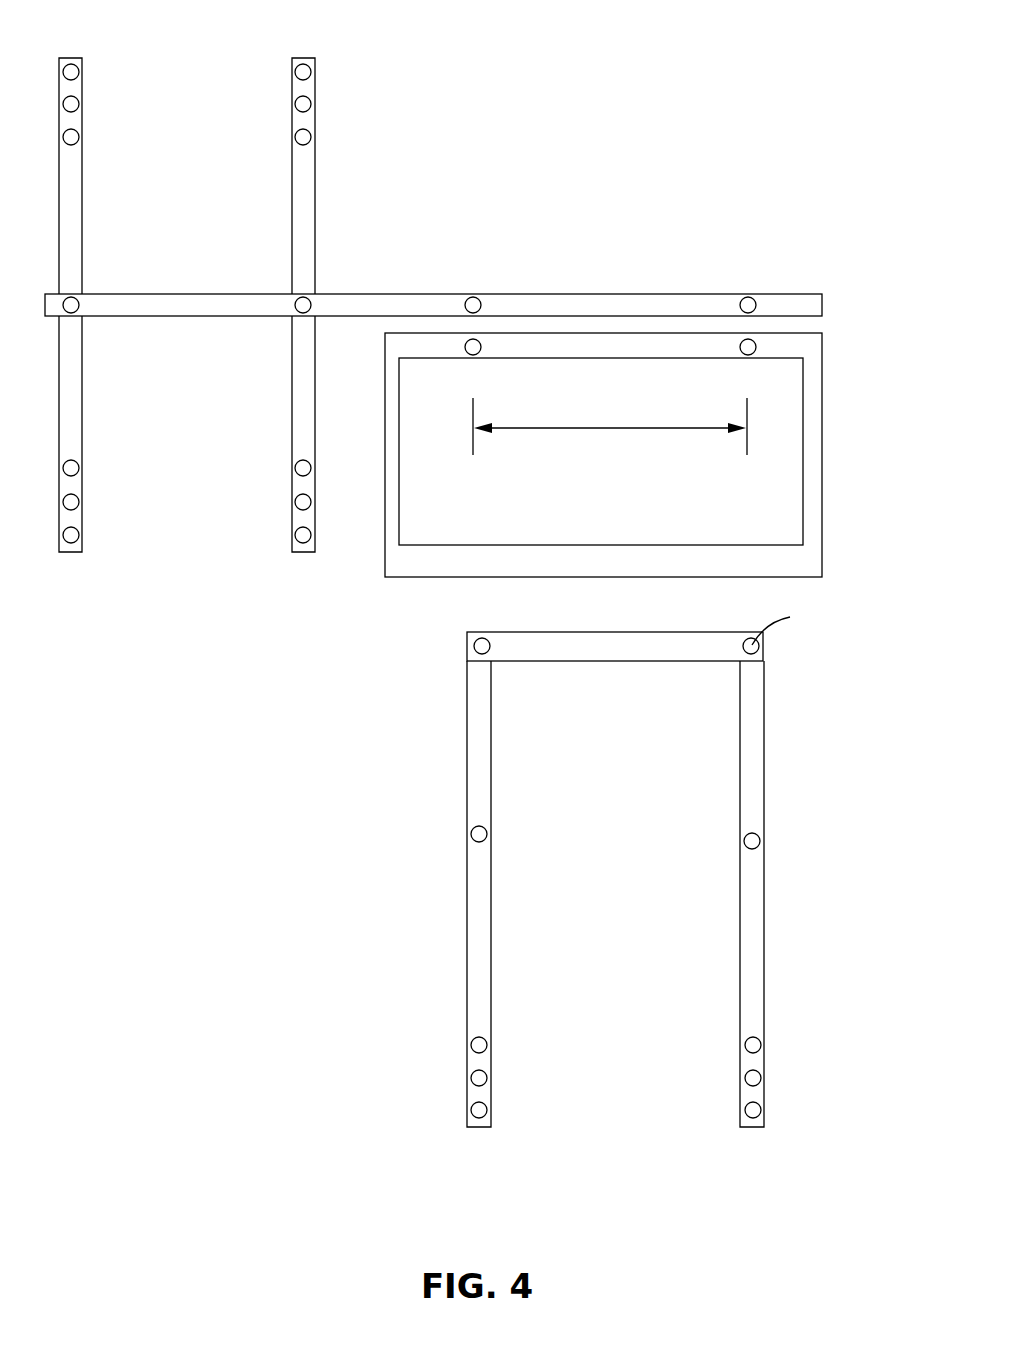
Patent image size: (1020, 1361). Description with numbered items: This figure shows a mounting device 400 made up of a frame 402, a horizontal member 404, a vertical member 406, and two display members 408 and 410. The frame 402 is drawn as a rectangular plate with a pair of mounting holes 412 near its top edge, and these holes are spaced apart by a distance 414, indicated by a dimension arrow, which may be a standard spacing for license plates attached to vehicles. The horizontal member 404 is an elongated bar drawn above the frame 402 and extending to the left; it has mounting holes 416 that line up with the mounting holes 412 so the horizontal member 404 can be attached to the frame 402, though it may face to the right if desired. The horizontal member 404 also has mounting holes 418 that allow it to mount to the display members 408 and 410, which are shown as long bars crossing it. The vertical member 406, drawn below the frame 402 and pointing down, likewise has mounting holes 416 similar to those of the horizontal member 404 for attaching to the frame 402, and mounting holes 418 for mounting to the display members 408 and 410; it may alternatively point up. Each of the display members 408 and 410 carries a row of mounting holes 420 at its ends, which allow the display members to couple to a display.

The mounting device 400 is at (780, 122).
The frame 402 is at (822, 393).
The horizontal member 404 is at (597, 294).
The vertical member 406 is at (467, 980).
The display member 408 is at (315, 217).
The display member 410 is at (82, 227).
The mounting holes 412 is at (478, 354).
The distance 414 is at (600, 428).
The mounting holes 416 is at (475, 296).
The mounting holes 418 is at (69, 303).
The mounting holes 420 is at (74, 71).